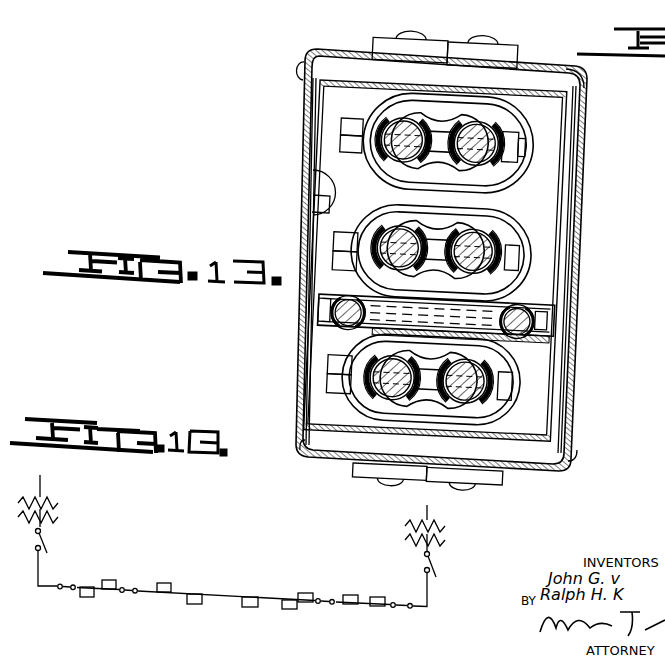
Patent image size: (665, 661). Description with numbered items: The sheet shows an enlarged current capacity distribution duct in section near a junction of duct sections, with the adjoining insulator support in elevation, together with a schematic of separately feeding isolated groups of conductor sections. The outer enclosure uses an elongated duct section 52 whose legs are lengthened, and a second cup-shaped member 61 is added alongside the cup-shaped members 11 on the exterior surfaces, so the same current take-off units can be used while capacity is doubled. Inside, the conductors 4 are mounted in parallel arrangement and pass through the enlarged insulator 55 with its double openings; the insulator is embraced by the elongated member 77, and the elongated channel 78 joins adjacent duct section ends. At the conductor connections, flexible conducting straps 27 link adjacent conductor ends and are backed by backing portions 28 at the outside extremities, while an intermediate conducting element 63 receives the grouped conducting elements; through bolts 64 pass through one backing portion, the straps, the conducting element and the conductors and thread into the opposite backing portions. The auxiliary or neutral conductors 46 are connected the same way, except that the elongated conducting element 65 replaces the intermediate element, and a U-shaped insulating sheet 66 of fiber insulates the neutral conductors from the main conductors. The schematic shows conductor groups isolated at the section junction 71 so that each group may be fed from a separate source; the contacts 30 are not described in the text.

In FIG. 13, the elongated duct section 52 is at (358, 54).
In FIG. 13, the second cup-shaped member 61 is at (385, 257).
In FIG. 13, the cup-shaped member 11 is at (490, 269).
In FIG. 13, the elongated channel 78 is at (533, 72).
In FIG. 13, the elongated member 77 is at (554, 88).
In FIG. 13, the enlarged insulator 55 is at (465, 262).
In FIG. 13, the backing portion 28 is at (440, 129).
In FIG. 13, the flexible conducting strap 27 is at (440, 137).
In FIG. 13, the conductor 4 is at (438, 170).
In FIG. 13, the through bolt 64 is at (415, 277).
In FIG. 13, the intermediate conducting element 63 is at (433, 308).
In FIG. 13, the U-shaped insulating sheet 66 is at (437, 296).
In FIG. 13, the auxiliary conductor 46 is at (427, 316).
In FIG. 13, the elongated conducting element 65 is at (460, 346).
In FIG. 16, the contact 30 is at (171, 577).
In FIG. 16, the section junction 71 is at (222, 606).